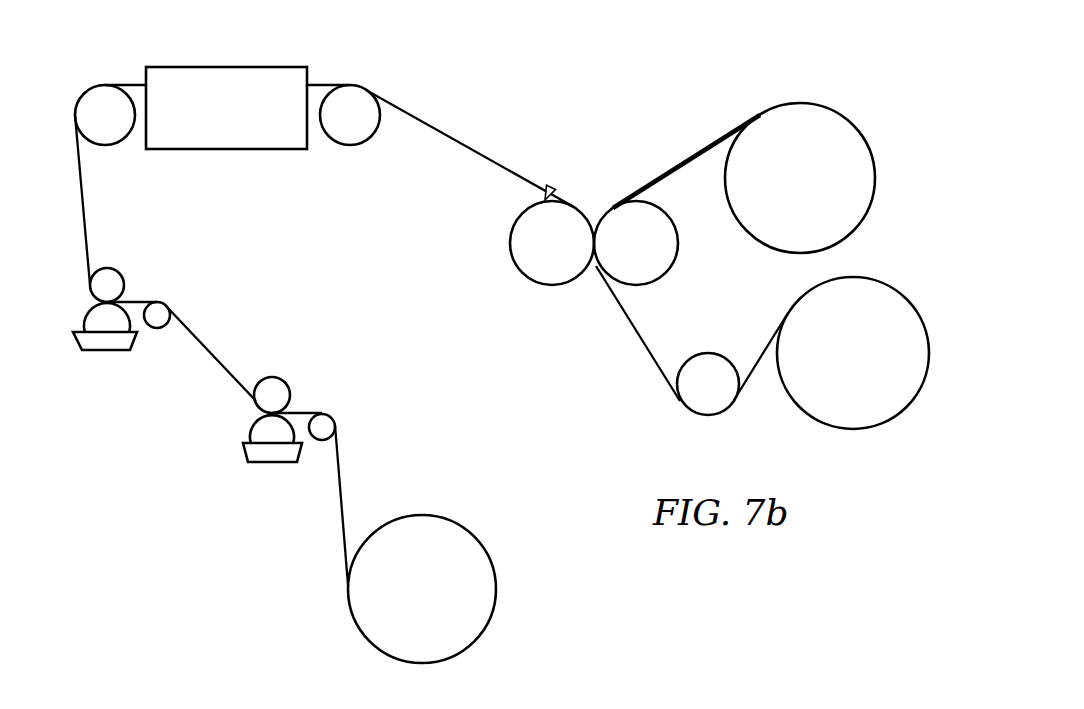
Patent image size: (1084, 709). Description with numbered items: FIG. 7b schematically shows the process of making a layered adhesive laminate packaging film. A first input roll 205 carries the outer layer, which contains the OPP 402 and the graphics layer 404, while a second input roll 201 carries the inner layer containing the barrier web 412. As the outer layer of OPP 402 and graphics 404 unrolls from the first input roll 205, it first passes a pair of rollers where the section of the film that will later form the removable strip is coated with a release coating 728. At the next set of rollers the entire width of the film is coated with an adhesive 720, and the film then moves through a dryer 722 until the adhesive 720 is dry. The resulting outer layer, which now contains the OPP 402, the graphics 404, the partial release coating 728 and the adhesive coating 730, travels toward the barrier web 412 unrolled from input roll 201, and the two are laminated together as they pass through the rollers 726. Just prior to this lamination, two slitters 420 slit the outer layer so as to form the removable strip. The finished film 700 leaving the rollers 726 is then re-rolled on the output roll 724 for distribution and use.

The dryer 722 is at (183, 65).
The OPP 402 is at (454, 336).
The graphics layer 404 is at (454, 336).
The adhesive coating 730 is at (459, 138).
The slitters 420 is at (553, 184).
The barrier web 412 is at (690, 158).
The rollers 726 is at (517, 268).
The input roll 201 is at (830, 110).
The output roll 724 is at (890, 288).
The finished film 700 is at (640, 337).
The adhesive 720 is at (102, 352).
The release coating 728 is at (270, 465).
The first input roll 205 is at (495, 605).